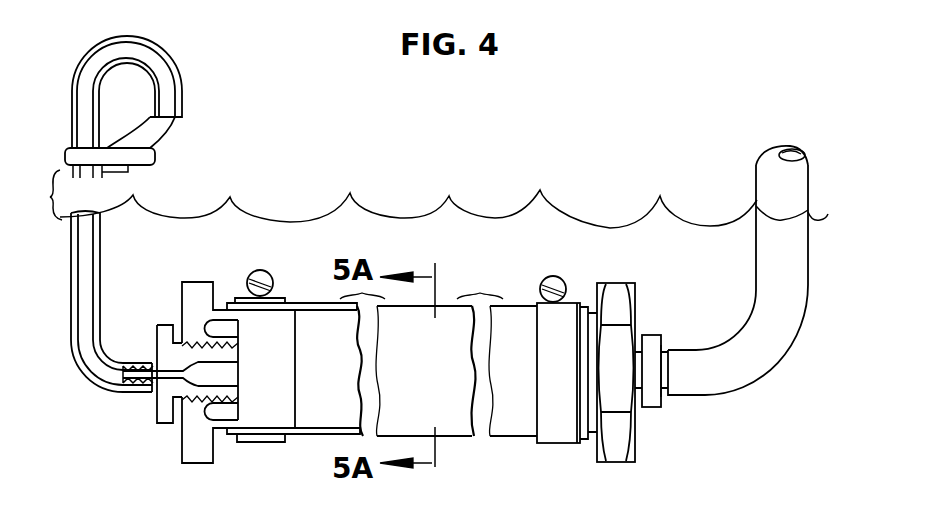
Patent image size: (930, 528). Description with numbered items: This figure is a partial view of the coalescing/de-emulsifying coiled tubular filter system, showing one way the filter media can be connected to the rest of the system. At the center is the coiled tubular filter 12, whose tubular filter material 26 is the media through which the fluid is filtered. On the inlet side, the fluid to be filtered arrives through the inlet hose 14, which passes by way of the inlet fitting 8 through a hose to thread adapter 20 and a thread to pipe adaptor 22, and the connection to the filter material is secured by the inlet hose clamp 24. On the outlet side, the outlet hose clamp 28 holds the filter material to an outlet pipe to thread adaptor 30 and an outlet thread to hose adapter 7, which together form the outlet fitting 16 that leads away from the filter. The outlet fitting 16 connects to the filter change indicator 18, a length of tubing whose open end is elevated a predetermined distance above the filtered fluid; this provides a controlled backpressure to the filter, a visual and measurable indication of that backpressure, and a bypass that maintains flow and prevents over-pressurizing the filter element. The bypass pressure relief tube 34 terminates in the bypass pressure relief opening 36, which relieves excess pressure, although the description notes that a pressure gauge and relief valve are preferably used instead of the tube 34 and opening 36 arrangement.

The outlet thread to hose adapter 7 is at (158, 425).
The inlet fitting 8 is at (677, 403).
The coiled tubular filter 12 is at (429, 398).
The inlet hose 14 is at (778, 356).
The outlet fitting 16 is at (71, 348).
The filter change indicator 18 is at (178, 71).
The hose to thread adapter 20 is at (662, 408).
The thread to pipe adaptor 22 is at (635, 463).
The inlet hose clamp 24 is at (552, 446).
The tubular filter material 26 is at (455, 437).
The outlet hose clamp 28 is at (262, 445).
The outlet pipe to thread adaptor 30 is at (190, 463).
The bypass pressure relief tube 34 is at (85, 253).
The bypass pressure relief opening 36 is at (156, 158).